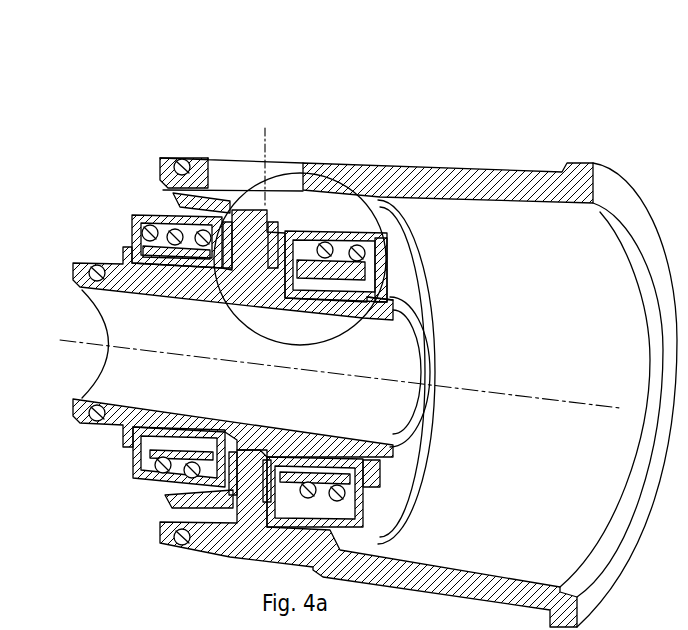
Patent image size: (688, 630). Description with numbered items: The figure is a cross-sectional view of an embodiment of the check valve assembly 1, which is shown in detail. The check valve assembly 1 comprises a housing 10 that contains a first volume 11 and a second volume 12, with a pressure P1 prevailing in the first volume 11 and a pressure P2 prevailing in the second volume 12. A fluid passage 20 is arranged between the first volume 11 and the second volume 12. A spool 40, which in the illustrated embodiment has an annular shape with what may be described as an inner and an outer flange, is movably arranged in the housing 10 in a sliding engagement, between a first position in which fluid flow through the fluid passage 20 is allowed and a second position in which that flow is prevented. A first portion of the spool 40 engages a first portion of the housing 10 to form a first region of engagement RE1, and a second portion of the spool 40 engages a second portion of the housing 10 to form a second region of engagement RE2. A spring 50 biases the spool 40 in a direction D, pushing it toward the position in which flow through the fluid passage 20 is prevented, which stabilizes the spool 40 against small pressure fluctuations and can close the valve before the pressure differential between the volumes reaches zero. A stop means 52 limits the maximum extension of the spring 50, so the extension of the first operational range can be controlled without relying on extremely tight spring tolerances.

The check valve assembly 1 is at (495, 103).
The housing 10 is at (430, 173).
The first volume 11 is at (280, 212).
The second volume 12 is at (467, 213).
The fluid passage 20 is at (380, 168).
The spool 40 is at (310, 315).
The spring 50 is at (315, 237).
The stop means 52 is at (408, 167).
The first region of engagement RE1 is at (297, 207).
The second region of engagement RE2 is at (355, 215).
The direction D is at (347, 345).